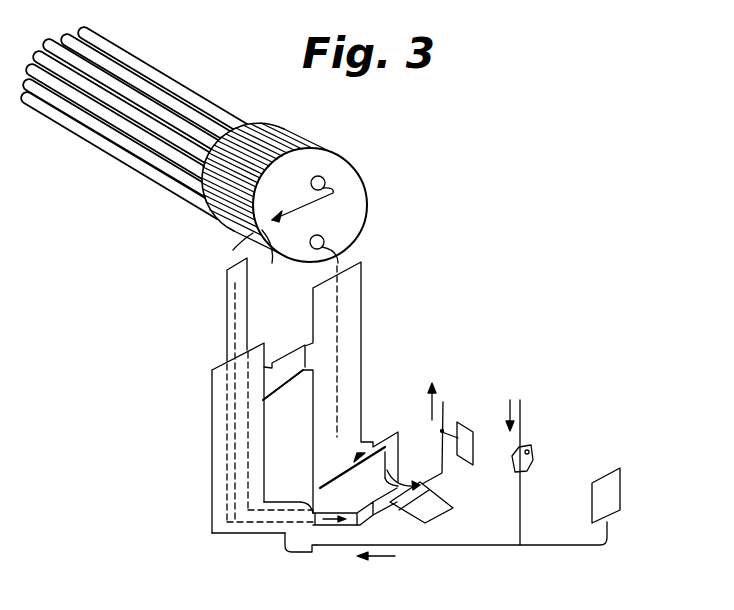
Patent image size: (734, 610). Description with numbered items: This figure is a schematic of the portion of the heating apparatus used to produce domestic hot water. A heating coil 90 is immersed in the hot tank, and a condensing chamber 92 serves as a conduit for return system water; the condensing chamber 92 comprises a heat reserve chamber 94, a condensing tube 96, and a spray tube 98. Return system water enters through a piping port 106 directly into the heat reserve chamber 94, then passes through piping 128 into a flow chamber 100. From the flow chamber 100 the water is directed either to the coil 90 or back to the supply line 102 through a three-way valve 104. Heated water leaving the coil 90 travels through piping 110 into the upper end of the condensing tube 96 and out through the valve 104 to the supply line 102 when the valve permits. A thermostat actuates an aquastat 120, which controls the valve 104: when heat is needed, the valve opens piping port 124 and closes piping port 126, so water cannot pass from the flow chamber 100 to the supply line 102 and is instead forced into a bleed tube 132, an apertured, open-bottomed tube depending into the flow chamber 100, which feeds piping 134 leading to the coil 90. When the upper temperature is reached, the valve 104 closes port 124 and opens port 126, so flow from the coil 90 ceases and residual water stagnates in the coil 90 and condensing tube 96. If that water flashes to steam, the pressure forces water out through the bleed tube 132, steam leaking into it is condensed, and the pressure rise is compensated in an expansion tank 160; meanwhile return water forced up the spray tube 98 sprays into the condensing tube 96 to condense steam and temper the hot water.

The heating coil 90 is at (289, 141).
The condensing chamber 92 is at (208, 407).
The heat reserve chamber 94 is at (212, 520).
The condensing tube 96 is at (222, 450).
The spray tube 98 is at (228, 298).
The flow chamber 100 is at (363, 293).
The supply line 102 is at (443, 402).
The three-way valve 104 is at (441, 508).
The piping port 106 is at (307, 553).
The piping 110 is at (283, 235).
The aquastat 120 is at (468, 427).
The piping port 124 is at (393, 503).
The piping port 126 is at (385, 492).
The piping 128 is at (291, 373).
The bleed tube 132 is at (338, 340).
The piping 134 is at (340, 263).
The expansion tank 160 is at (623, 483).